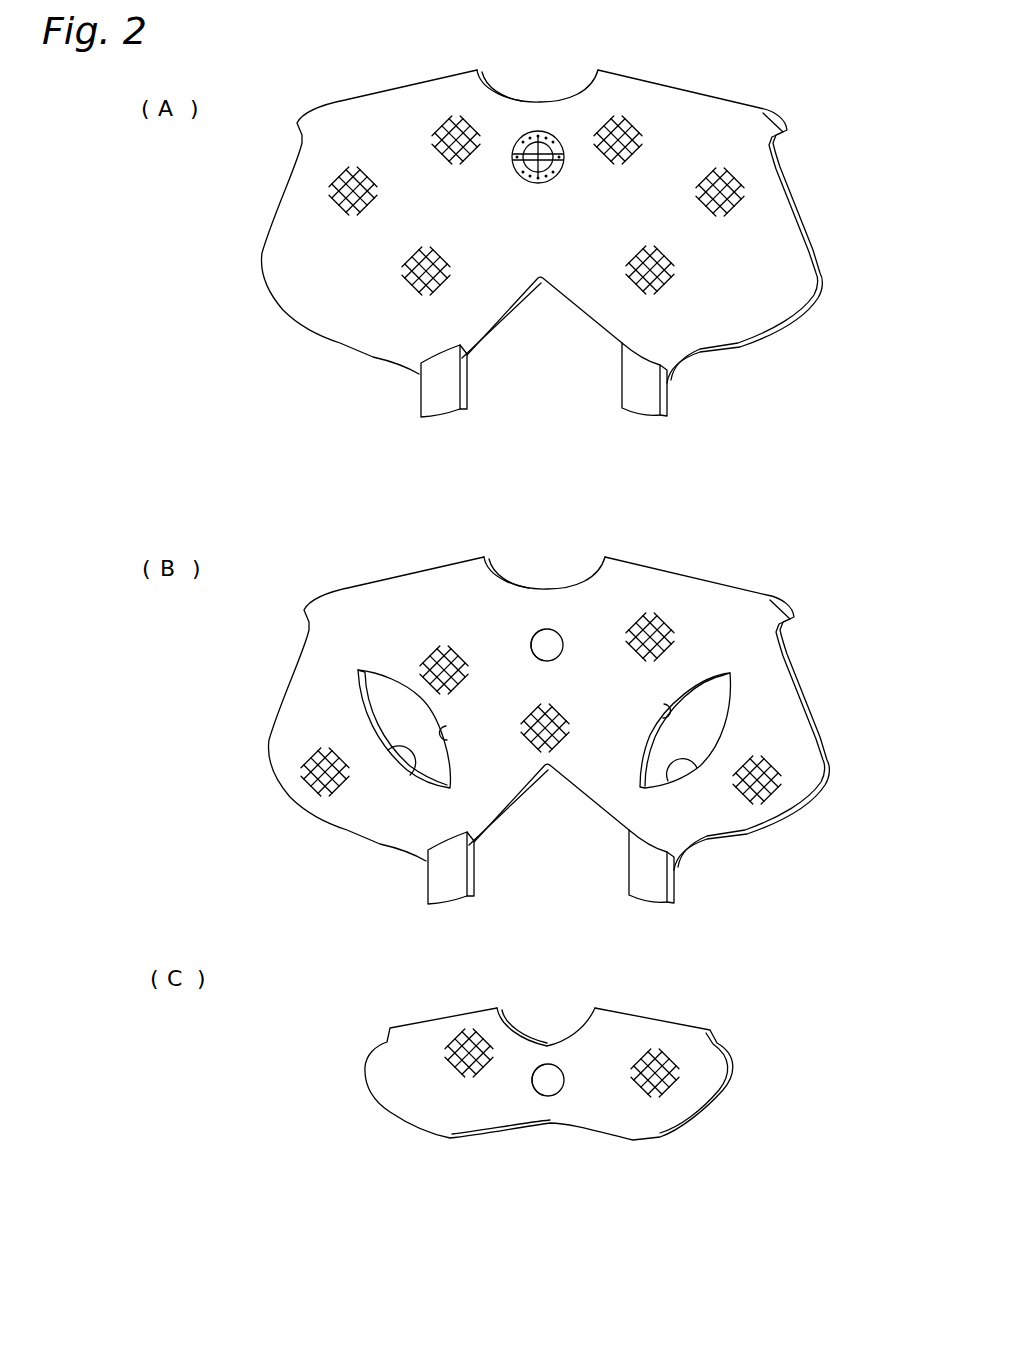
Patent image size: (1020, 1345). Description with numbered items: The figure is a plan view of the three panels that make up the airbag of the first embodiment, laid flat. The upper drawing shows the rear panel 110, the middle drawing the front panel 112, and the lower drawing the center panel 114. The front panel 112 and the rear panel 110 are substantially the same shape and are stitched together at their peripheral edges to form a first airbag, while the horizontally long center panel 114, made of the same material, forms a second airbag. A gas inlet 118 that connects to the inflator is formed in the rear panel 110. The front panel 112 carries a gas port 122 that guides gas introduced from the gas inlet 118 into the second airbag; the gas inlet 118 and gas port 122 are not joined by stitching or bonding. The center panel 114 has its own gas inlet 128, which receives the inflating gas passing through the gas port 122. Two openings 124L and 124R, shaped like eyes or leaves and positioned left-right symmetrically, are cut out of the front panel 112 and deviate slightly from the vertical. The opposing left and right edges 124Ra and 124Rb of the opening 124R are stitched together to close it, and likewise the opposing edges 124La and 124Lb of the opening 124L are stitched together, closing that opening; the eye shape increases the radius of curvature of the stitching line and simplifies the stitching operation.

The rear panel 110 is at (330, 322).
The front panel 112 is at (415, 588).
The center panel 114 is at (413, 1117).
The gas inlet 118 is at (524, 133).
The gas port 122 is at (552, 629).
The opening 124L is at (386, 690).
The edge of opening 124La is at (410, 776).
The edge of opening 124Lb is at (450, 743).
The opening 124R is at (703, 721).
The edge of opening 124Ra is at (697, 768).
The edge of opening 124Rb is at (661, 710).
The gas inlet 128 is at (546, 1094).